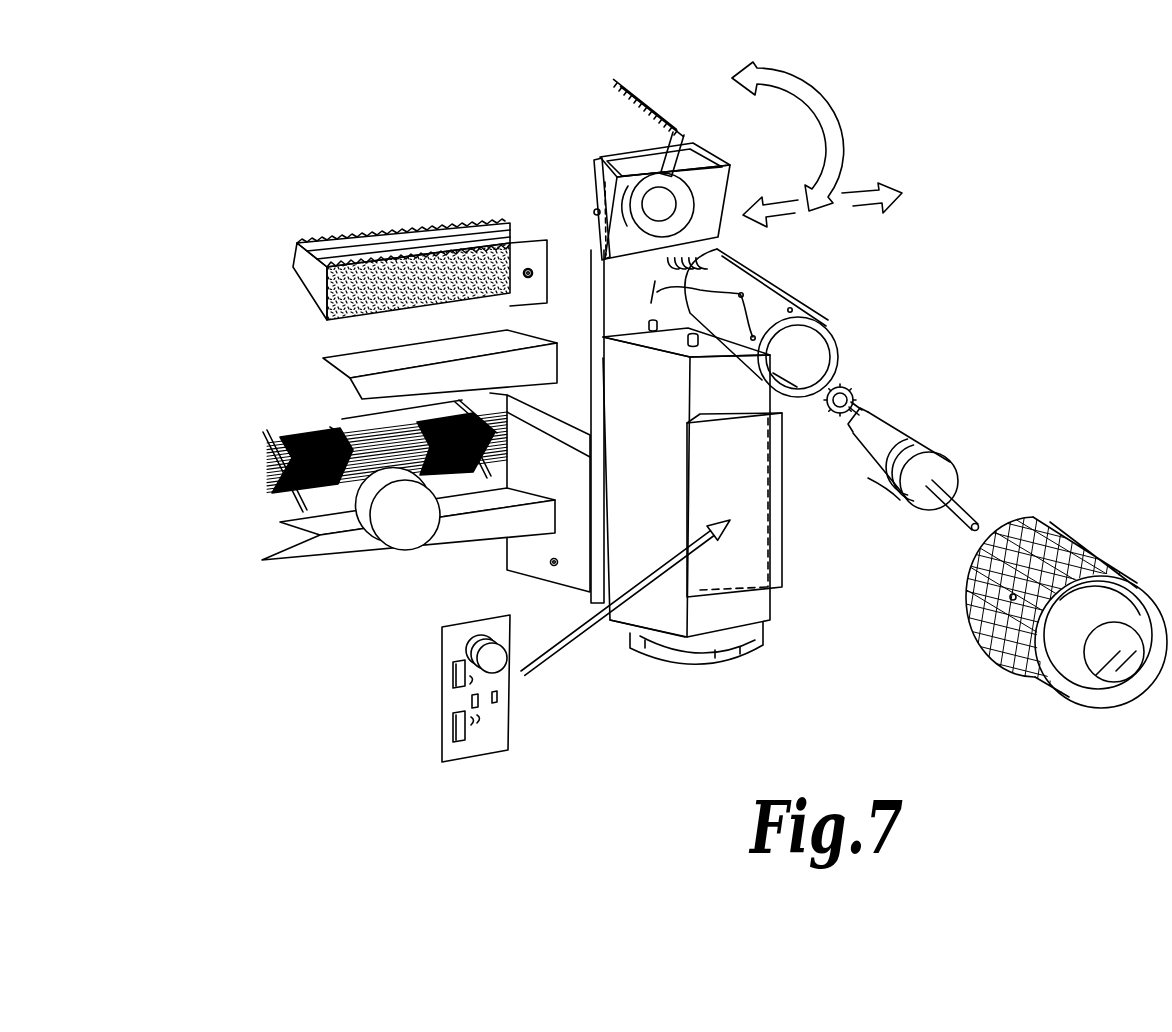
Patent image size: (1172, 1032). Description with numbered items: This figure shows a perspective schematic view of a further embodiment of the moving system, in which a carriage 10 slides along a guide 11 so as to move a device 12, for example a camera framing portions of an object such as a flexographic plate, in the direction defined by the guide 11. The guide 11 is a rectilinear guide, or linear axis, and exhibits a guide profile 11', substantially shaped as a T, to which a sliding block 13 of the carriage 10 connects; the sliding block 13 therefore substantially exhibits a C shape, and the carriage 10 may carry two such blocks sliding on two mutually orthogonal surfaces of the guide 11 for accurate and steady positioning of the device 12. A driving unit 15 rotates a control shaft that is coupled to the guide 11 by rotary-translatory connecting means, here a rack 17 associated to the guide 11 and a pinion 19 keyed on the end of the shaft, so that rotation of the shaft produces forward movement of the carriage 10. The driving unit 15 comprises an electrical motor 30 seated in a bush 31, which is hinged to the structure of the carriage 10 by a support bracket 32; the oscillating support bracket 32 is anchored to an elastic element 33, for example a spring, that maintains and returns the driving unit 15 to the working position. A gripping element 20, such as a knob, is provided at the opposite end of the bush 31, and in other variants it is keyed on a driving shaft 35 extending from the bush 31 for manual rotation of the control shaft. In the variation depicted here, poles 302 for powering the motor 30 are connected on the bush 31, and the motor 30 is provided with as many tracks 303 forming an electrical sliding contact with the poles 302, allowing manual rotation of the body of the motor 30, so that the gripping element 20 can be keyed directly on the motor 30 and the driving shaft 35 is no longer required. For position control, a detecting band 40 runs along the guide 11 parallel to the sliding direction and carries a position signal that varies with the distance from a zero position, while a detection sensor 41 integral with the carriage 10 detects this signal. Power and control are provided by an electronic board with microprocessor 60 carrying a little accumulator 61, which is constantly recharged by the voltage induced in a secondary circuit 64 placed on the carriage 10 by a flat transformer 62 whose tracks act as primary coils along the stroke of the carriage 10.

The carriage 10 is at (625, 283).
The guide 11 is at (382, 310).
The guide profile 11' is at (387, 496).
The device 12 is at (667, 607).
The sliding block 13 is at (570, 272).
The driving unit 15 is at (935, 439).
The rack 17 is at (387, 227).
The pinion 19 is at (847, 387).
The gripping element 20 is at (1090, 537).
The electrical motor 30 is at (930, 447).
The bush 31 is at (792, 292).
The support bracket 32 is at (622, 227).
The elastic element 33 is at (647, 95).
The driving shaft 35 is at (970, 507).
The detecting band 40 is at (371, 233).
The detection sensor 41 is at (530, 290).
The electronic board with microprocessor 60 is at (441, 719).
The accumulator 61 is at (483, 657).
The transformer 62 is at (267, 468).
The secondary circuit 64 is at (367, 533).
The poles 302 is at (790, 310).
The tracks 303 is at (897, 468).